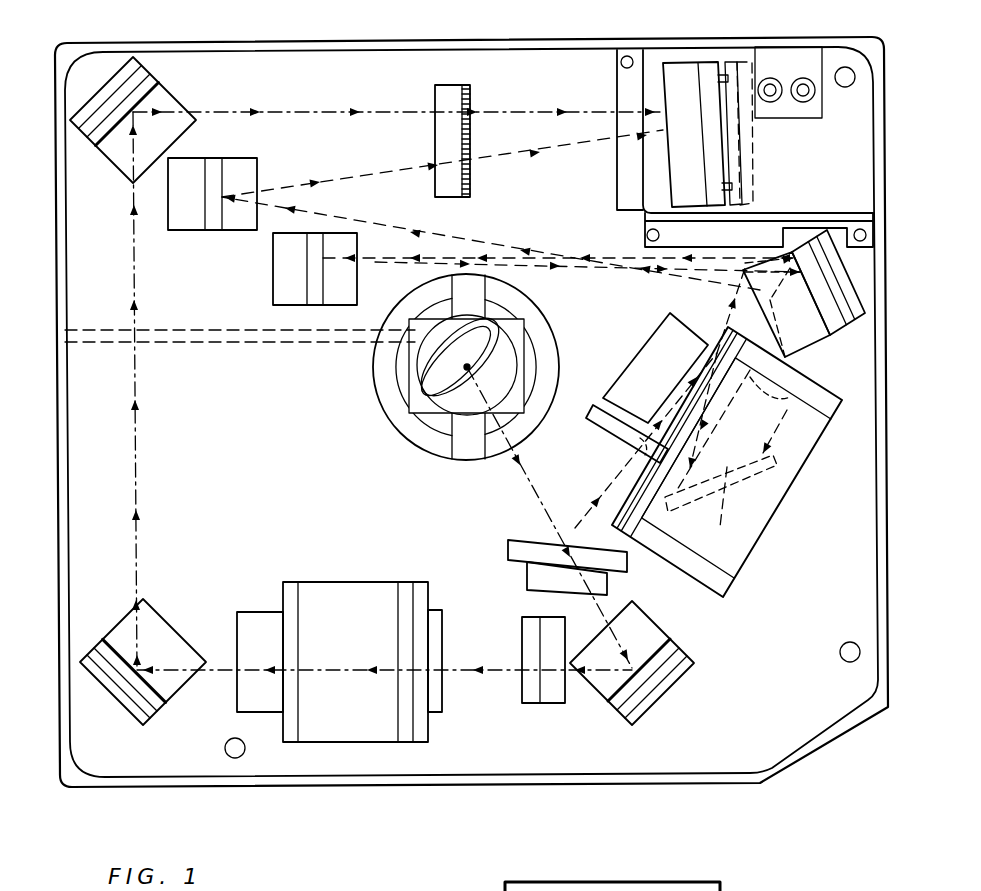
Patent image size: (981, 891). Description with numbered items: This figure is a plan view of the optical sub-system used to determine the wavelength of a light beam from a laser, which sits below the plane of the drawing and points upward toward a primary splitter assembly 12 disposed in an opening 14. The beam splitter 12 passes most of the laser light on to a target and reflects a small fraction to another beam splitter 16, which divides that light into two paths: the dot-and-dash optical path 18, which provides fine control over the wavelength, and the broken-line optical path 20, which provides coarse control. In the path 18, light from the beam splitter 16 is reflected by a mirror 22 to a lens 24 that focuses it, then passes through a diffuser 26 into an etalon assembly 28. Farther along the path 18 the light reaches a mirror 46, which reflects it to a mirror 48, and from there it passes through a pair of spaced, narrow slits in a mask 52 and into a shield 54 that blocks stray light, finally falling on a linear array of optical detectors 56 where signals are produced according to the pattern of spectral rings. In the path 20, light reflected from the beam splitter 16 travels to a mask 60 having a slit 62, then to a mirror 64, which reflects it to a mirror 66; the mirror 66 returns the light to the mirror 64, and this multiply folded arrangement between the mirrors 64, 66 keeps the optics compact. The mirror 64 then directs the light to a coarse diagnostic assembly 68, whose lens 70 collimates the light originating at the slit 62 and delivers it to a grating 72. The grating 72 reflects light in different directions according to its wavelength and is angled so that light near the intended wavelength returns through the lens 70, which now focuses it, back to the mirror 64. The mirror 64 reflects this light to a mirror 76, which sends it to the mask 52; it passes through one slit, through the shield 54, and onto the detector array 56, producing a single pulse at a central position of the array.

The primary splitter assembly 12 is at (492, 350).
The opening 14 is at (493, 330).
The beam splitter 16 is at (512, 538).
The optical path 18 is at (497, 672).
The optical path 20 is at (598, 503).
The mirror 22 is at (658, 640).
The lens 24 is at (550, 698).
The diffuser 26 is at (426, 655).
The etalon assembly 28 is at (345, 578).
The mirror 46 is at (107, 640).
The mirror 48 is at (150, 96).
The mask 52 is at (462, 88).
The shield 54 is at (617, 192).
The linear array of optical detectors 56 is at (706, 62).
The mask 60 is at (601, 402).
The slit 62 is at (640, 438).
The mirror 64 is at (812, 318).
The mirror 66 is at (335, 303).
The coarse diagnostic assembly 68 is at (780, 515).
The lens 70 is at (800, 386).
The grating 72 is at (722, 505).
The mirror 76 is at (222, 170).